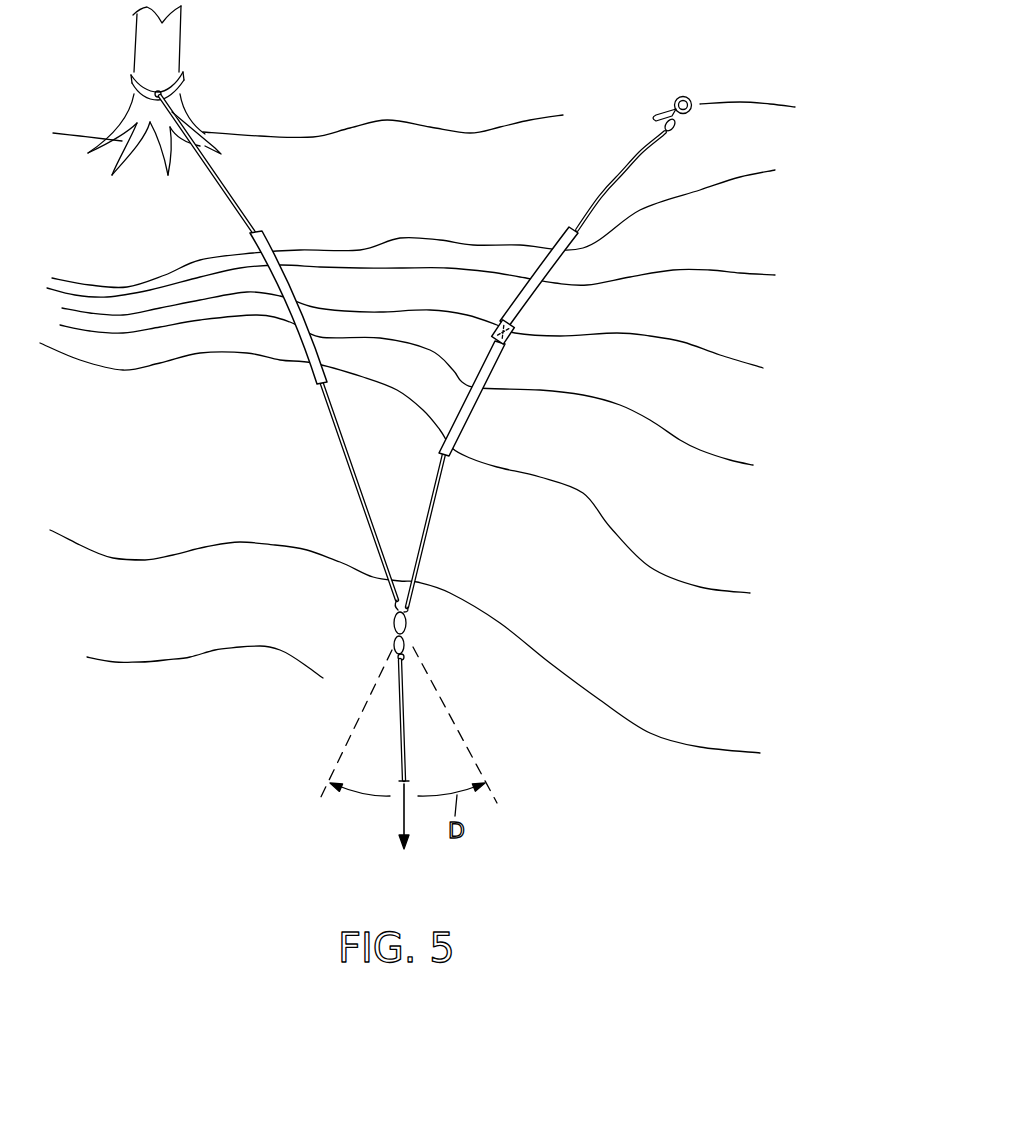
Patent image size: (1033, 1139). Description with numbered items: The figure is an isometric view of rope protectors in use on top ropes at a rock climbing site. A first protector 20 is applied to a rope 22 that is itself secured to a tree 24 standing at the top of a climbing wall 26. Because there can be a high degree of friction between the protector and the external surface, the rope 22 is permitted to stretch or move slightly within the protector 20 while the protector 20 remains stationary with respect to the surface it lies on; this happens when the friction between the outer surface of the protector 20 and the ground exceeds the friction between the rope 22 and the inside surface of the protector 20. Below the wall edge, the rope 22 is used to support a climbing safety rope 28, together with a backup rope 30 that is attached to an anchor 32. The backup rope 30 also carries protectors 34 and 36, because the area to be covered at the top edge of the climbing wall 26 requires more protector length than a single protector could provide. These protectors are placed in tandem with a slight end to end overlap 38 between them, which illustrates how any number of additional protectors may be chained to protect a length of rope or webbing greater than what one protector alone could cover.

The first protector 20 is at (304, 356).
The rope 22 is at (240, 207).
The tree 24 is at (178, 34).
The climbing wall 26 is at (193, 290).
The climbing safety rope 28 is at (406, 749).
The backup rope 30 is at (600, 197).
The anchor 32 is at (683, 96).
The protector 34 is at (472, 409).
The protector 36 is at (552, 263).
The end to end overlap 38 is at (508, 342).